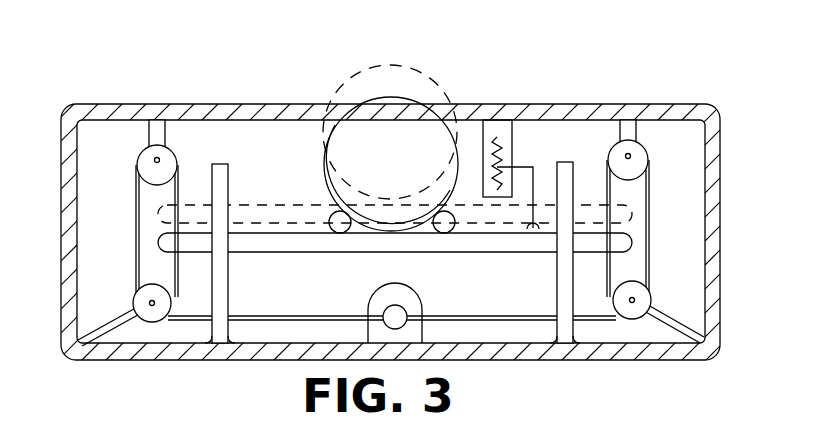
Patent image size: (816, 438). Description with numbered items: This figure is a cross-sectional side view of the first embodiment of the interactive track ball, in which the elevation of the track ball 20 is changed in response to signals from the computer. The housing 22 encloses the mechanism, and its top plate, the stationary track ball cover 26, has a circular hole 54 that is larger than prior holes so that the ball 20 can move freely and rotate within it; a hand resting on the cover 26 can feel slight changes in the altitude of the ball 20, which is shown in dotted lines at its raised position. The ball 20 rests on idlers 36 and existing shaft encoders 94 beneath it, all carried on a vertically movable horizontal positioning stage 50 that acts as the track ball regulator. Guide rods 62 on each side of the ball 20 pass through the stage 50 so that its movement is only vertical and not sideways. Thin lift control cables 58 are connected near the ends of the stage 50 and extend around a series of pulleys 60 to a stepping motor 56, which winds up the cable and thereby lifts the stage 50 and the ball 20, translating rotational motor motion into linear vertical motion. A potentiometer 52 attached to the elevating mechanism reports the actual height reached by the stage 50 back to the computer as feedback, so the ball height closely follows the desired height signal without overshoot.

The track ball 20 is at (428, 100).
The housing 22 is at (684, 101).
The track ball cover 26 is at (238, 104).
The idlers 36 is at (440, 208).
The positioning stage 50 is at (472, 254).
The potentiometer 52 is at (537, 172).
The circular hole 54 is at (350, 106).
The stepping motor 56 is at (368, 312).
The lift control cables 58 is at (132, 218).
The pulleys 60 is at (140, 150).
The guide rods 62 is at (234, 172).
The shaft encoders 94 is at (328, 214).